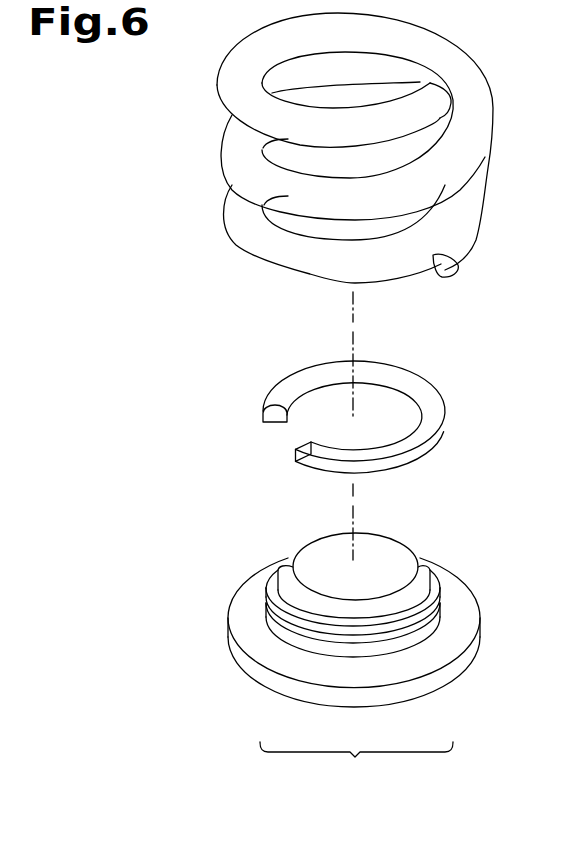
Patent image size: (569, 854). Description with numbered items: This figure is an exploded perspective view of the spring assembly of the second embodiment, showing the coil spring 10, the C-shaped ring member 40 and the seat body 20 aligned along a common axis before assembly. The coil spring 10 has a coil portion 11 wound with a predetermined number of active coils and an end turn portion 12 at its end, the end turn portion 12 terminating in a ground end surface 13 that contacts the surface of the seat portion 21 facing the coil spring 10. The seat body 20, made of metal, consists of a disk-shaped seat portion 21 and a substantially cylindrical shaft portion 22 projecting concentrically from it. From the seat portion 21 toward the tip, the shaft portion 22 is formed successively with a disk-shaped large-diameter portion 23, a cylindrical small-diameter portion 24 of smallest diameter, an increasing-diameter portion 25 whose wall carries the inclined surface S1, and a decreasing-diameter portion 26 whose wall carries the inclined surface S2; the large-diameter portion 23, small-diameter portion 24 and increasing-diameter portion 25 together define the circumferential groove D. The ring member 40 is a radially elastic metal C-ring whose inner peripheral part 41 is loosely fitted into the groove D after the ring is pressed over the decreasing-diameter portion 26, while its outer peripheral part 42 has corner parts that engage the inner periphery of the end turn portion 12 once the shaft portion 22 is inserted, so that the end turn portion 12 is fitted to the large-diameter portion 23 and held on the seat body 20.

The coil spring 10 is at (390, 160).
The coil portion 11 is at (458, 148).
The end turn portion 12 is at (459, 250).
The ground end surface 13 is at (452, 271).
The ring member 40 is at (330, 415).
The inner peripheral part 41 is at (298, 392).
The outer peripheral part 42 is at (317, 462).
The seat body 20 is at (384, 641).
The seat portion 21 is at (458, 627).
The shaft portion 22 is at (380, 547).
The large-diameter portion 23 is at (400, 645).
The small-diameter portion 24 is at (362, 645).
The increasing-diameter portion 25 is at (333, 636).
The decreasing-diameter portion 26 is at (418, 574).